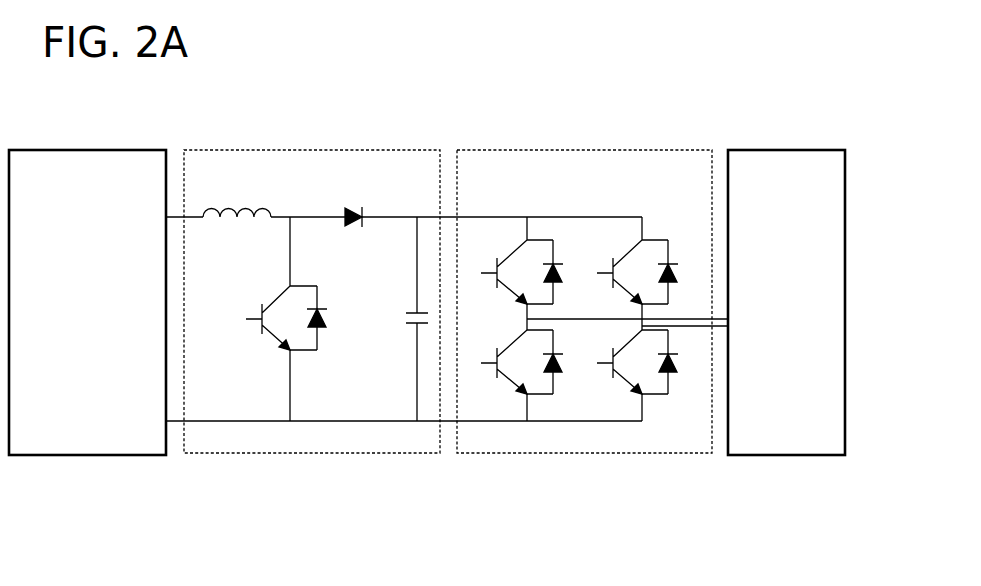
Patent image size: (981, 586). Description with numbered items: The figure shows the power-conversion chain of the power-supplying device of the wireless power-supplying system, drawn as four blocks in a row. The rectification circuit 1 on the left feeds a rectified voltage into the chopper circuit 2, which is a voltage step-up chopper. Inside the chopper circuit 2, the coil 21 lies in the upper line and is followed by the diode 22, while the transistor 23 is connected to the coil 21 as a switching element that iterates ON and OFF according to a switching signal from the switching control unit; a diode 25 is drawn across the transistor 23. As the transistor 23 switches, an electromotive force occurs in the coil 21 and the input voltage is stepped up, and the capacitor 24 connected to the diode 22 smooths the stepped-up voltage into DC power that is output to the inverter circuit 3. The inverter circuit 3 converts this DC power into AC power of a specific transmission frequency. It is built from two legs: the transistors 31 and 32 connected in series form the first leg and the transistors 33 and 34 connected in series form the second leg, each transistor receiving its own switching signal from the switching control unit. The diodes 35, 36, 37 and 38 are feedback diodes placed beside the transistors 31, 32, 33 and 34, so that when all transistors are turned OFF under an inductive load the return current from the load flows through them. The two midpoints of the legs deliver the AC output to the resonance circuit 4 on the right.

The rectification circuit 1 is at (107, 149).
The chopper circuit 2 is at (314, 149).
The inverter circuit 3 is at (589, 149).
The resonance circuit 4 is at (784, 149).
The coil 21 is at (222, 222).
The diode 22 is at (352, 228).
The transistor 23 is at (270, 330).
The capacitor 24 is at (406, 323).
The diode 25 is at (326, 322).
The transistor 31 is at (510, 292).
The transistor 32 is at (510, 382).
The transistor 33 is at (625, 292).
The transistor 34 is at (625, 382).
The diode 35 is at (560, 268).
The diode 36 is at (560, 364).
The diode 37 is at (670, 271).
The diode 38 is at (668, 378).